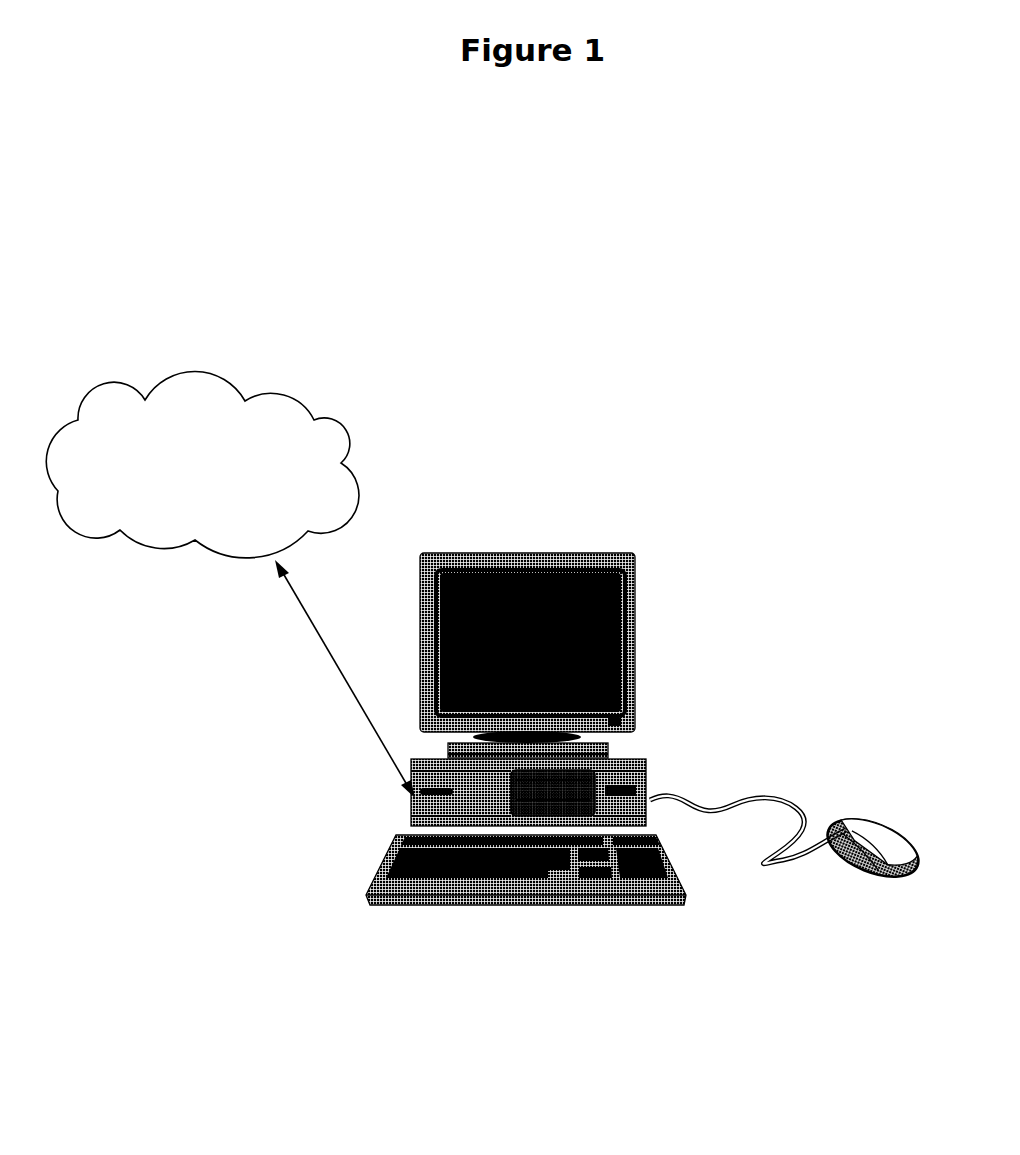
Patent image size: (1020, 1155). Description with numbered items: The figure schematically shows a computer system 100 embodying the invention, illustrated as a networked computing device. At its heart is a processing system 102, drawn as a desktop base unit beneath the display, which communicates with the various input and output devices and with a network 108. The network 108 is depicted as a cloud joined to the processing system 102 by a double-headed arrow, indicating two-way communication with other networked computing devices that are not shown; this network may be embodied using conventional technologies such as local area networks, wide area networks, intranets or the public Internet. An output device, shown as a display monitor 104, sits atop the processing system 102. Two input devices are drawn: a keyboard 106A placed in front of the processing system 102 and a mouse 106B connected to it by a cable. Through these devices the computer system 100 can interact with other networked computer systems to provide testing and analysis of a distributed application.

The computer system 100 is at (680, 422).
The processing system 102 is at (643, 760).
The input devices 104 is at (633, 592).
The input device 106A is at (567, 895).
The input device 106B is at (838, 856).
The network 108 is at (202, 464).